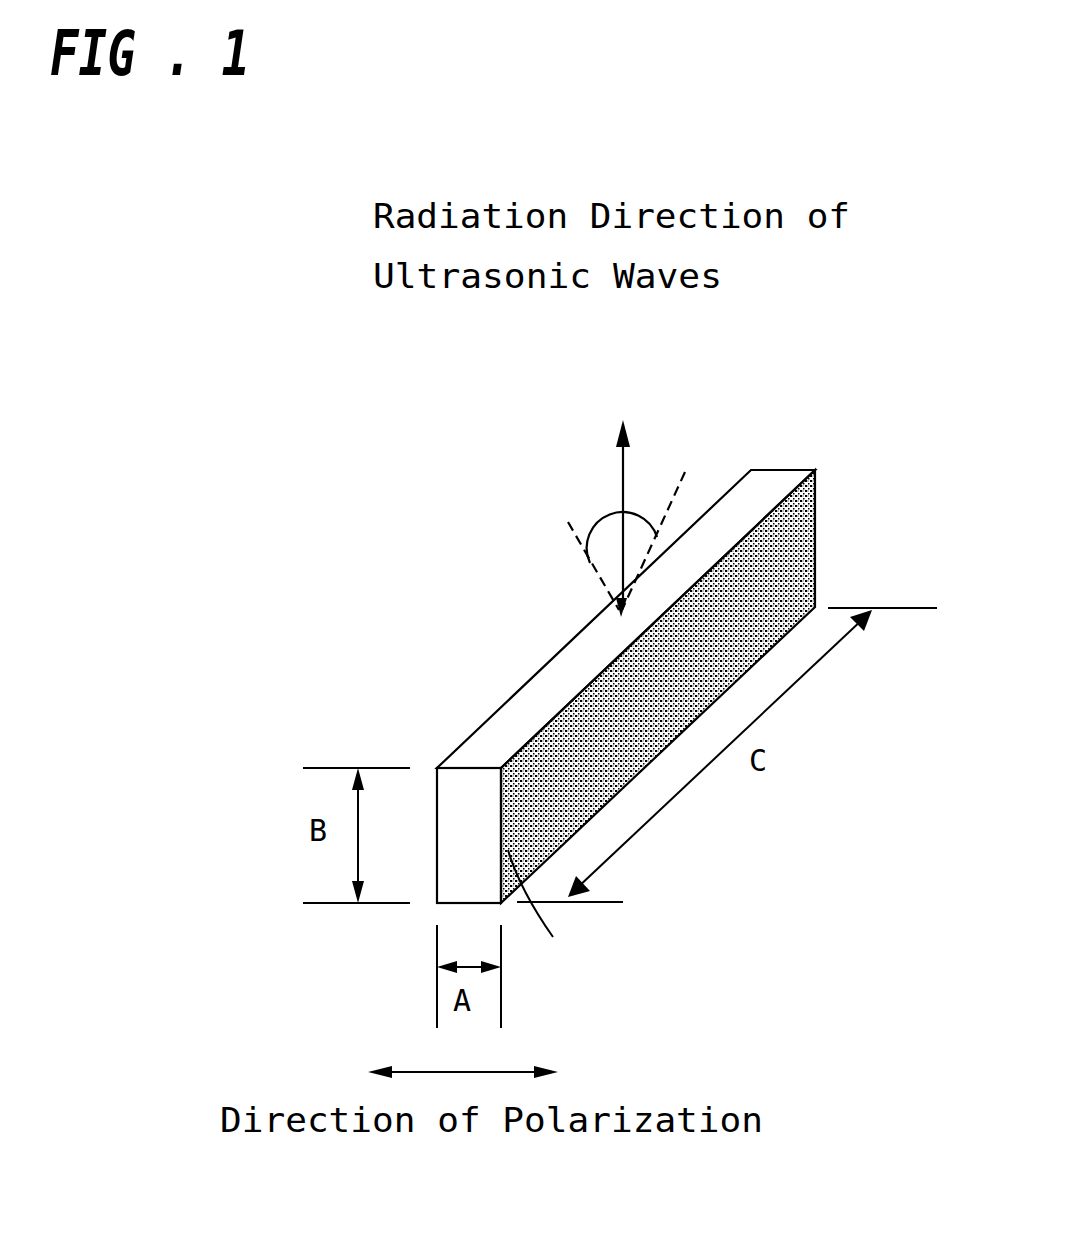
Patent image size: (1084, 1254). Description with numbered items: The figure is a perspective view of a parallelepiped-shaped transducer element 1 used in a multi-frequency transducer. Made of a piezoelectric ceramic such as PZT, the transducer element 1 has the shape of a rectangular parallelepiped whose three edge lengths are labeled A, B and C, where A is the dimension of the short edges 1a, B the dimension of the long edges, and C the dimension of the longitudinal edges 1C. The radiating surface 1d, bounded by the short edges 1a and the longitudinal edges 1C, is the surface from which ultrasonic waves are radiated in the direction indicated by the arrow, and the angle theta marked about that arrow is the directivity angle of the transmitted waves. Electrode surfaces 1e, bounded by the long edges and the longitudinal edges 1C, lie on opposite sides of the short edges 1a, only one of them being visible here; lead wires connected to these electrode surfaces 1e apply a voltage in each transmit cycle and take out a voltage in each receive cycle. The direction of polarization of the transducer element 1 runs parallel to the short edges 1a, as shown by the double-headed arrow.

The parallelepiped-shaped transducer element 1 is at (412, 503).
The short edges 1a is at (470, 767).
The longitudinal edges 1C is at (600, 670).
The radiating surface 1d is at (763, 488).
The electrode surfaces 1e is at (788, 547).